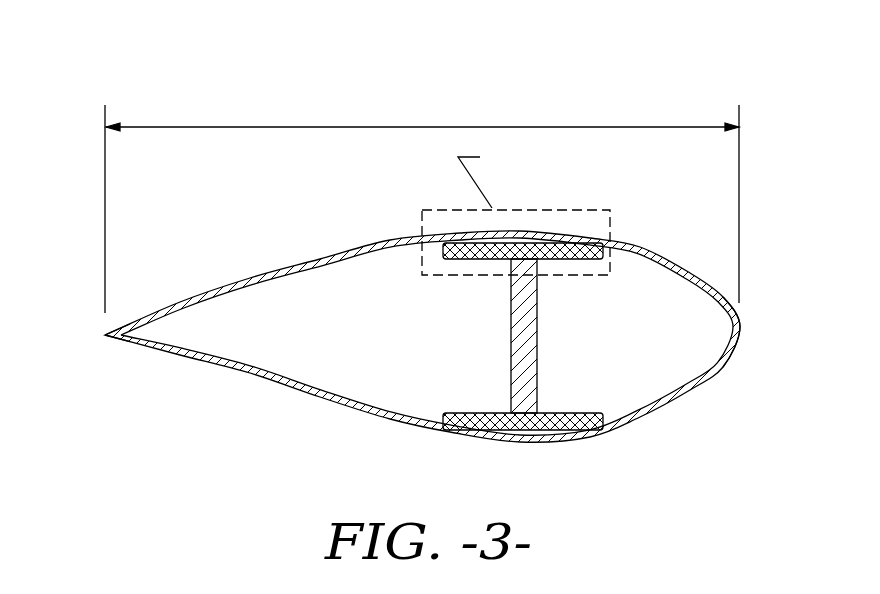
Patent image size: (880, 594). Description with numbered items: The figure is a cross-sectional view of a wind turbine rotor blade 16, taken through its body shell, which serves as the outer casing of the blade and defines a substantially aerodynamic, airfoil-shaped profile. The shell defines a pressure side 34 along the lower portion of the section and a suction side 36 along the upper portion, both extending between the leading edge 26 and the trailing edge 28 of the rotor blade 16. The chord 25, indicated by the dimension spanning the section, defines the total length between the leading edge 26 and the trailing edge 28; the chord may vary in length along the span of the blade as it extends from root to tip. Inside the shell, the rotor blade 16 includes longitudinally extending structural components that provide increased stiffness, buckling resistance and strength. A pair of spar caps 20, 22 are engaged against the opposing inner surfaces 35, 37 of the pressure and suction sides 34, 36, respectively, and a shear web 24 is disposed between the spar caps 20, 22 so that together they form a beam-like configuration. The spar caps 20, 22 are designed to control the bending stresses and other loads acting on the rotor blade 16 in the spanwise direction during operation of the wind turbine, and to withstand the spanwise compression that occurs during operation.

The rotor blade 16 is at (420, 250).
The spar cap 20 is at (560, 250).
The spar cap 22 is at (563, 425).
The shear web 24 is at (537, 379).
The chord 25 is at (316, 127).
The leading edge 26 is at (742, 325).
The trailing edge 28 is at (105, 335).
The pressure side 34 is at (338, 408).
The inner surface of pressure side 35 is at (257, 363).
The suction side 36 is at (345, 247).
The inner surface of suction side 37 is at (312, 265).